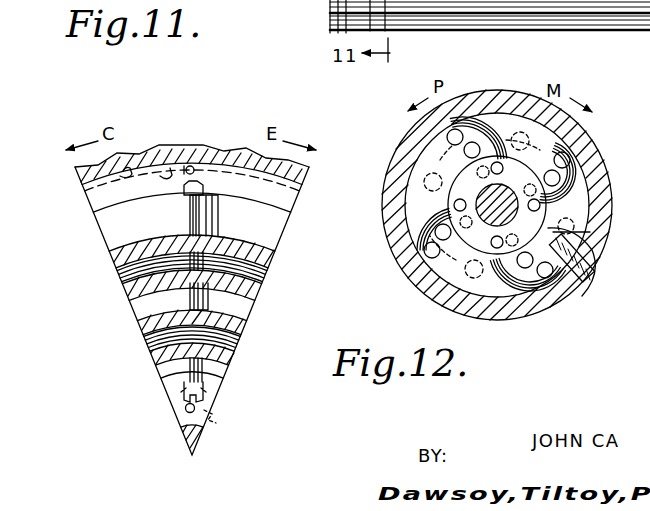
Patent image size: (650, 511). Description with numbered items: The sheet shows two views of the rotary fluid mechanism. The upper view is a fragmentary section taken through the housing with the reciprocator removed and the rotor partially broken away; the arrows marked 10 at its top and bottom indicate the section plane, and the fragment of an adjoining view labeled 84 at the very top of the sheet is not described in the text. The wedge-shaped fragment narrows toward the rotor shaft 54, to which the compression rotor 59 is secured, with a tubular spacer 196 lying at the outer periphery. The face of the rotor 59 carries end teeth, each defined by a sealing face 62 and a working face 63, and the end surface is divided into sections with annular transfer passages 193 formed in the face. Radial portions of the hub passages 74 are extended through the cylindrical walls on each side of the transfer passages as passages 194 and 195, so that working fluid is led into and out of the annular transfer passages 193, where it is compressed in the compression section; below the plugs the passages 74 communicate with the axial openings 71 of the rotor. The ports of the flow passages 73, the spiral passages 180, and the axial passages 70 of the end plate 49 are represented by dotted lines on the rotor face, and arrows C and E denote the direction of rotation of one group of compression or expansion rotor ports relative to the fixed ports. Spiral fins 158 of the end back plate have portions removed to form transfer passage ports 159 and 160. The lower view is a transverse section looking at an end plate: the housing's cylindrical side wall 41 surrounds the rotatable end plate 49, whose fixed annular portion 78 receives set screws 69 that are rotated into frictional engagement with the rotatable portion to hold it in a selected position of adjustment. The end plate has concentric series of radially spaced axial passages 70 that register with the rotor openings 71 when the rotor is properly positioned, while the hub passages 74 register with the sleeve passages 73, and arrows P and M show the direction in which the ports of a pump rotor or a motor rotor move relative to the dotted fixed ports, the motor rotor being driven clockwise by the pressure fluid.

In FIG. 11, the section line 10- 10 is at (190, 68).
In FIG. 12, the side wall 41 is at (395, 255).
In FIG. 11, the end plate 49 is at (95, 193).
In FIG. 12, the end plate 49 is at (568, 240).
In FIG. 11, the rotor shaft 54 is at (197, 444).
In FIG. 11, the compression rotor 59 is at (298, 192).
In FIG. 11, the sealing face 62 is at (165, 372).
In FIG. 12, the sealing face 62 is at (467, 280).
In FIG. 11, the working face 63 is at (215, 212).
In FIG. 12, the working face 63 is at (475, 116).
In FIG. 12, the set screws 69 is at (567, 272).
In FIG. 11, the axial passages 70 is at (130, 168).
In FIG. 12, the axial passages 70 is at (499, 317).
In FIG. 11, the axial openings 71 is at (196, 172).
In FIG. 12, the axial openings 71 is at (420, 270).
In FIG. 11, the flow passages 73 is at (213, 418).
In FIG. 12, the flow passages 73 is at (497, 205).
In FIG. 11, the hub passages 74 is at (186, 410).
In FIG. 12, the hub passages 74 is at (488, 200).
In FIG. 12, the fixed annular portion 78 is at (565, 290).
In FIG. 11, the shaft 84 is at (330, 20).
In FIG. 11, the spiral fins 158 is at (263, 286).
In FIG. 11, the transfer passage port 159 is at (266, 258).
In FIG. 11, the transfer passage port 160 is at (145, 275).
In FIG. 11, the spiral passage 180 is at (165, 178).
In FIG. 11, the annular transfer passages 193 is at (115, 265).
In FIG. 11, the radial passage portion 194 is at (187, 228).
In FIG. 11, the radial passage portion 195 is at (245, 298).
In FIG. 11, the tubular spacer 196 is at (226, 152).